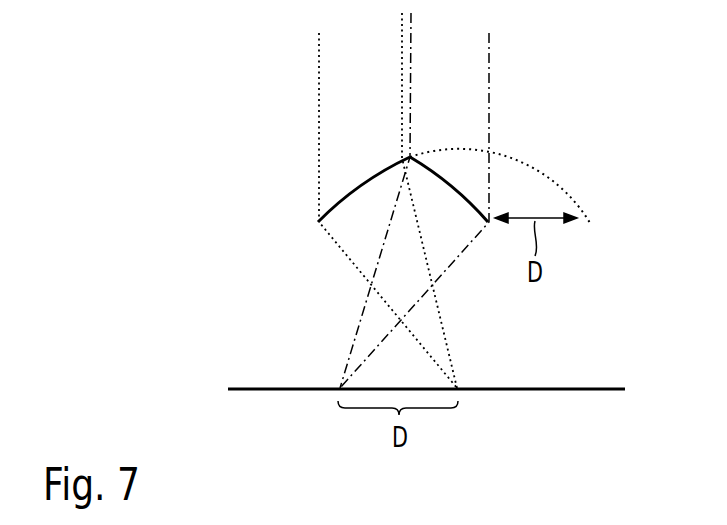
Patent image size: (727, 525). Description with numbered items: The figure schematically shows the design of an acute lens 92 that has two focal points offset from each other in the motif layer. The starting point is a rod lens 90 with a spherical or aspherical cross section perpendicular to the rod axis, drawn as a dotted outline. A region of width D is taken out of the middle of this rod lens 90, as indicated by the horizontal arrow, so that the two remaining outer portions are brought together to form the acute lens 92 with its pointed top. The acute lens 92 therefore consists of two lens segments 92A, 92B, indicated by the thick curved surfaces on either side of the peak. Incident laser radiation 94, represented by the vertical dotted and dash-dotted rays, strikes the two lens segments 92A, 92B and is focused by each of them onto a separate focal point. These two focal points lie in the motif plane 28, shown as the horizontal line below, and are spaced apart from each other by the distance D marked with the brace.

The motif plane 28 is at (585, 388).
The rod lens 90 is at (540, 172).
The acute lens 92 is at (335, 211).
The lens segment 92A is at (357, 207).
The lens segment 92B is at (435, 206).
The incident laser radiation 94 is at (376, 66).